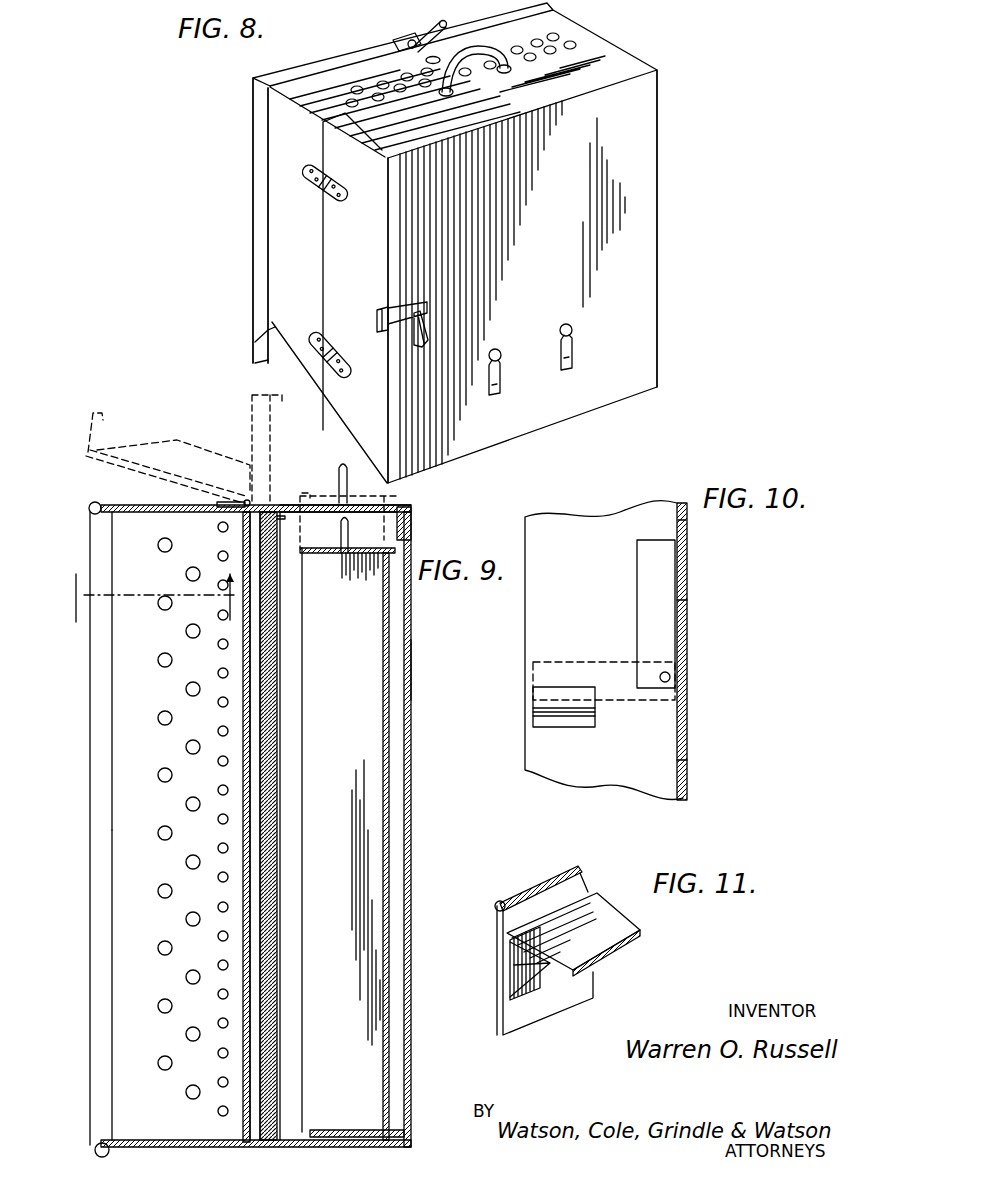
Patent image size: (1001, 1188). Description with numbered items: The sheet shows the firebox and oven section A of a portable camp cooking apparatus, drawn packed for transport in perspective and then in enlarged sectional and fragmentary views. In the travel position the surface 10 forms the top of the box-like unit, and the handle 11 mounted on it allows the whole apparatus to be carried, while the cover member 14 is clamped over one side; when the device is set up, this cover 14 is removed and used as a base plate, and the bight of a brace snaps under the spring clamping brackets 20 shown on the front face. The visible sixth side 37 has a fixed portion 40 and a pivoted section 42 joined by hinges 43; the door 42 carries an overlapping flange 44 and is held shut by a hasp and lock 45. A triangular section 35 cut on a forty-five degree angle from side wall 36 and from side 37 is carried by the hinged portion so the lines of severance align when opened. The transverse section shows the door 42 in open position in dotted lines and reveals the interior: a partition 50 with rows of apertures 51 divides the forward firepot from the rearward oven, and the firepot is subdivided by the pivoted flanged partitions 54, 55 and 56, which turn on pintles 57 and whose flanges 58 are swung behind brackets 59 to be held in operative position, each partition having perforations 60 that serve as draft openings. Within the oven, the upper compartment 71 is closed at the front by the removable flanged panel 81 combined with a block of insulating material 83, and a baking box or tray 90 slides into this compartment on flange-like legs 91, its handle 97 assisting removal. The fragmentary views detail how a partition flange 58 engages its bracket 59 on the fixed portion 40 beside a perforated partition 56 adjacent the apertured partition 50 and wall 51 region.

In FIG. 8, the surface 10 is at (575, 70).
In FIG. 9, the surface 10 is at (146, 596).
In FIG. 8, the handle 11 is at (478, 52).
In FIG. 8, the cover member 14 is at (256, 188).
In FIG. 8, the spring clamping brackets 20 is at (560, 356).
In FIG. 8, the triangular section 35 is at (278, 357).
In FIG. 9, the side wall 36 is at (173, 1127).
In FIG. 8, the side wall 37 is at (289, 240).
In FIG. 9, the side wall 37 is at (283, 499).
In FIG. 8, the fixed portion 40 is at (279, 120).
In FIG. 9, the fixed portion 40 is at (148, 508).
In FIG. 10, the fixed portion 40 is at (537, 737).
In FIG. 11, the fixed portion 40 is at (543, 882).
In FIG. 8, the pivoted section 42 is at (380, 218).
In FIG. 9, the pivoted section 42 is at (122, 458).
In FIG. 8, the hinges 43 is at (325, 190).
In FIG. 8, the overlapping flange 44 is at (398, 256).
In FIG. 9, the overlapping flange 44 is at (412, 525).
In FIG. 8, the hasp and lock 45 is at (431, 299).
In FIG. 9, the hasp and lock 45 is at (240, 498).
In FIG. 9, the partition 50 is at (250, 840).
In FIG. 10, the partition 50 is at (686, 682).
In FIG. 10, the apertures 51 is at (710, 738).
In FIG. 9, the pivoted flanged partition 54 is at (123, 788).
In FIG. 9, the pivoted flanged partition 55 is at (76, 671).
In FIG. 11, the pivoted flanged partition 55 is at (610, 931).
In FIG. 9, the pivoted flanged partition 56 is at (76, 979).
In FIG. 10, the pivoted flanged partition 56 is at (684, 588).
In FIG. 10, the pintles 57 is at (662, 683).
In FIG. 10, the flanges 58 is at (645, 573).
In FIG. 11, the flanges 58 is at (510, 948).
In FIG. 10, the brackets 59 is at (543, 700).
In FIG. 11, the brackets 59 is at (527, 970).
In FIG. 9, the perforations 60 is at (190, 752).
In FIG. 10, the perforations 60 is at (684, 657).
In FIG. 9, the upper compartment 71 is at (386, 528).
In FIG. 9, the removable flanged panel 81 is at (252, 418).
In FIG. 9, the insulating material 83 is at (268, 648).
In FIG. 9, the baking box or tray 90 is at (370, 743).
In FIG. 9, the flange-like legs 91 is at (388, 558).
In FIG. 9, the handle 97 is at (340, 524).
In FIG. 8, the firebox and oven section A is at (666, 86).
In FIG. 9, the firebox and oven section A is at (413, 672).